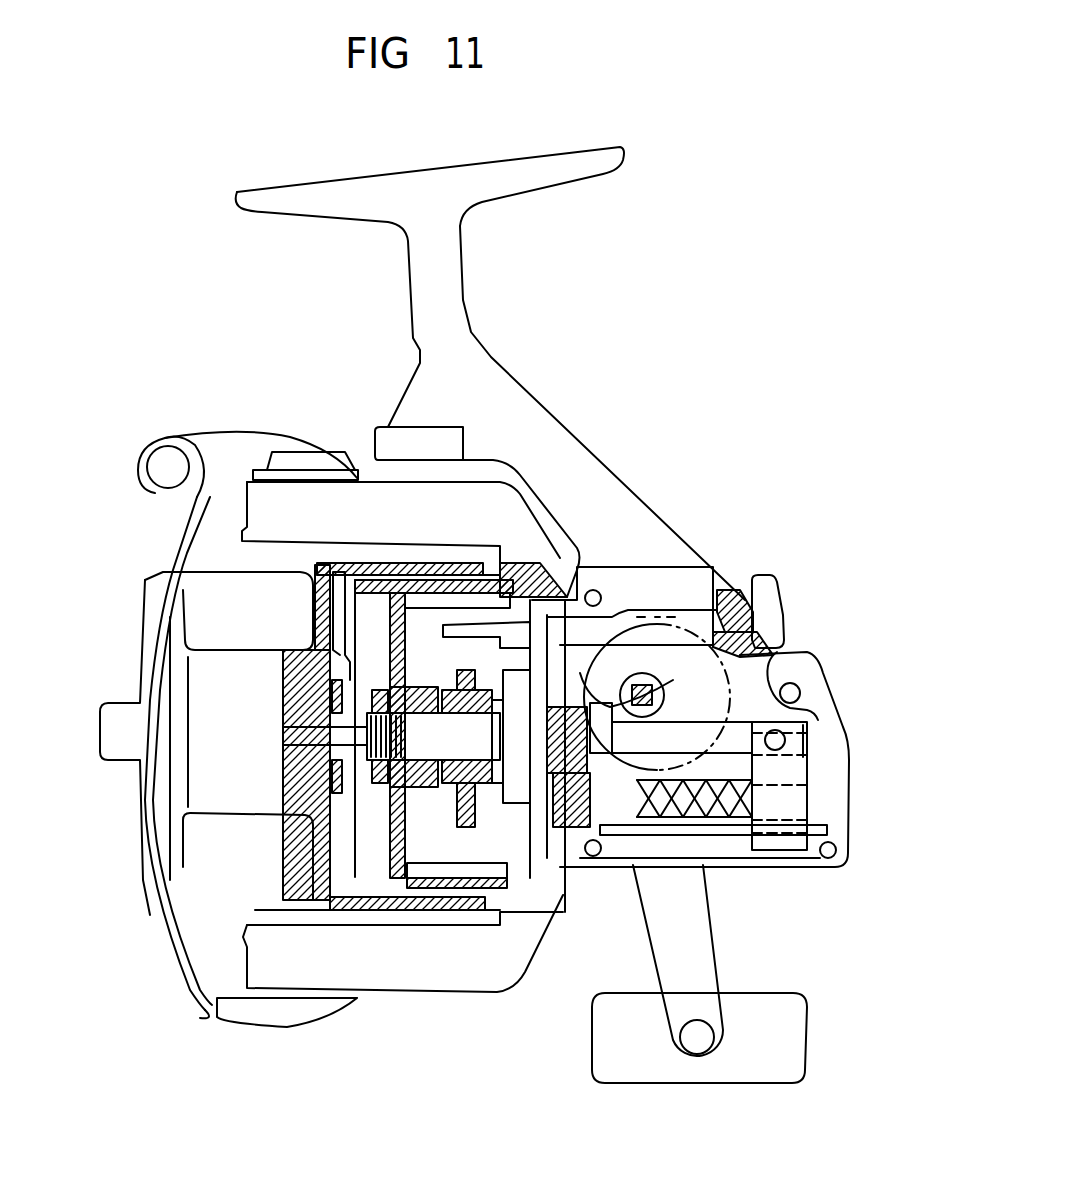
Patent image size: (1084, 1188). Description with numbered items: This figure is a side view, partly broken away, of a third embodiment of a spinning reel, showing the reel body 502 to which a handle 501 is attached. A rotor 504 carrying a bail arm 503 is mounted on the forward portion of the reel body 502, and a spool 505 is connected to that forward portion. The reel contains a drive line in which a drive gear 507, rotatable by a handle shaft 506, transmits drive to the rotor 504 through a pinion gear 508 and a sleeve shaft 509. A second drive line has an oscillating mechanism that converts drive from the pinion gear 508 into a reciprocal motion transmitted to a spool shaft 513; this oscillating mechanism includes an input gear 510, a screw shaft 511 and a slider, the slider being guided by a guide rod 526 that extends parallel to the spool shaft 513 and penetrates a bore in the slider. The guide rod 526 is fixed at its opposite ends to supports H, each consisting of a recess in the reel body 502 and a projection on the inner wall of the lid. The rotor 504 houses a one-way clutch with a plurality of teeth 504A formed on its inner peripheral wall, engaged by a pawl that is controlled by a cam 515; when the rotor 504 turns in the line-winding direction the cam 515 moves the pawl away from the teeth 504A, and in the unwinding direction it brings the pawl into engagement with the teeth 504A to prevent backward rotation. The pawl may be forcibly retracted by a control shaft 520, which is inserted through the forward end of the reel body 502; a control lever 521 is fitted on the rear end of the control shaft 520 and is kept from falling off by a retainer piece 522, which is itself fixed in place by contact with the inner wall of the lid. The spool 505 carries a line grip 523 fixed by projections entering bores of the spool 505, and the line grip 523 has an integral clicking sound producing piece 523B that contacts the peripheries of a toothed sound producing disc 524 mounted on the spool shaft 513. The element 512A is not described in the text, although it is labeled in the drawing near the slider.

The handle 501 is at (712, 970).
The reel body 502 is at (640, 600).
The bail arm 503 is at (167, 947).
The rotor 504 is at (483, 985).
The teeth 504A is at (440, 870).
The spool 505 is at (218, 800).
The handle shaft 506 is at (698, 633).
The drive gear 507 is at (675, 640).
The pinion gear 508 is at (563, 597).
The sleeve shaft 509 is at (420, 800).
The input gear 510 is at (563, 823).
The screw shaft 511 is at (703, 810).
The slider block 512A is at (793, 768).
The spool shaft 513 is at (783, 693).
The cam 515 is at (502, 825).
The control shaft 520 is at (640, 610).
The control lever 521 is at (810, 593).
The retainer piece 522 is at (733, 587).
The line grip 523 is at (330, 563).
The clicking sound producing piece 523B is at (340, 660).
The toothed sound producing disc 524 is at (317, 852).
The guide rod 526 is at (805, 833).
The supports H is at (833, 815).